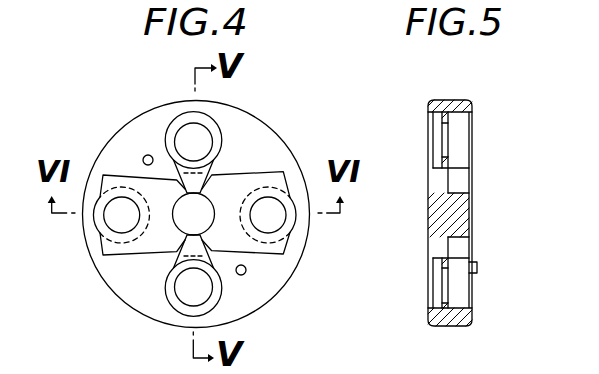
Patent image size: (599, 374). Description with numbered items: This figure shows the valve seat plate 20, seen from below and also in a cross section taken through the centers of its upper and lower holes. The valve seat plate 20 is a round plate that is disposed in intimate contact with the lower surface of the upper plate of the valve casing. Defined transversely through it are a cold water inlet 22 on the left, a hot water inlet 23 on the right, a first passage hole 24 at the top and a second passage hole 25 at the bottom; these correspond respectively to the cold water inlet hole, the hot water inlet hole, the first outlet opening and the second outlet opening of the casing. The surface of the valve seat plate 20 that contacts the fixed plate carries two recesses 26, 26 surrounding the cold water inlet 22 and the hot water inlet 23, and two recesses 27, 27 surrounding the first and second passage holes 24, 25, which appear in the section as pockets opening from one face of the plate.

In FIG. 4, the valve seat plate 20 is at (273, 130).
In FIG. 5, the valve seat plate 20 is at (450, 213).
In FIG. 4, the cold water inlet 22 is at (110, 218).
In FIG. 4, the hot water inlet 23 is at (280, 217).
In FIG. 4, the first passage hole 24 is at (203, 132).
In FIG. 5, the first passage hole 24 is at (445, 138).
In FIG. 4, the second passage hole 25 is at (183, 295).
In FIG. 5, the second passage hole 25 is at (455, 287).
In FIG. 4, the recesses 26 is at (123, 177).
In FIG. 4, the recesses 27 is at (176, 125).
In FIG. 5, the recesses 27 is at (463, 178).